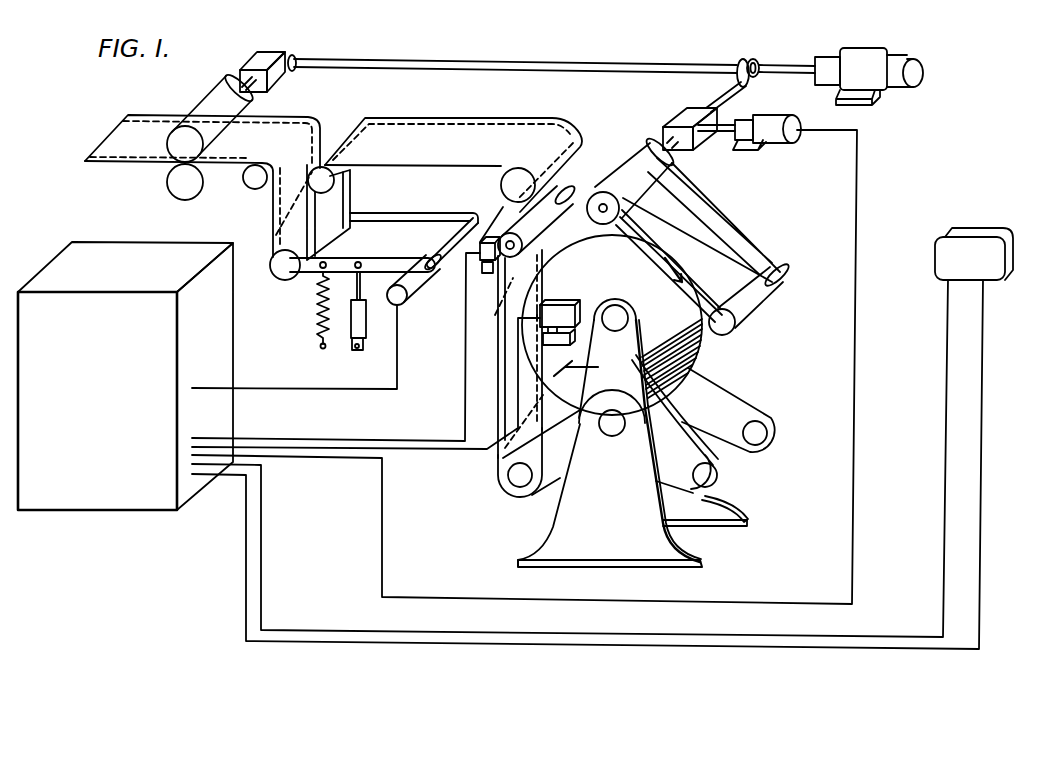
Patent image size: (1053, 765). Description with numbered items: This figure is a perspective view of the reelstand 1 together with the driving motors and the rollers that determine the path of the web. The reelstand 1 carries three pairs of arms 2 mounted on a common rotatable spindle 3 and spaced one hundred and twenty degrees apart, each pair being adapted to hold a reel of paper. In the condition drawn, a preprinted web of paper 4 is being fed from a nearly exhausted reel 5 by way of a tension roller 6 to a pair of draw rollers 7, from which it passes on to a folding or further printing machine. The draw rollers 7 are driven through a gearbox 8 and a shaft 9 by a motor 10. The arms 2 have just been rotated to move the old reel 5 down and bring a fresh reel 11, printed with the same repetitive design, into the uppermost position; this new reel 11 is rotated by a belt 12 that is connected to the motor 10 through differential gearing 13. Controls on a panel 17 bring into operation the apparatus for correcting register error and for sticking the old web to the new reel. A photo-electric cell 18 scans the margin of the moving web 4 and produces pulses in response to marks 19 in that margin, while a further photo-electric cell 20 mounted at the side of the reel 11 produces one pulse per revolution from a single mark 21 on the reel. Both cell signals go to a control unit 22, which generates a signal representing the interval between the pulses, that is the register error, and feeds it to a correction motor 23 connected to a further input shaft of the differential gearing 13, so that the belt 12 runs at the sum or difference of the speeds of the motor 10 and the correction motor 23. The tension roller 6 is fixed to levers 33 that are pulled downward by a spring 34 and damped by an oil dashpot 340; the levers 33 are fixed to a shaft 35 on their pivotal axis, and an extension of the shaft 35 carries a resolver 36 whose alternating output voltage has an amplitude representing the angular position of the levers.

The reelstand 1 is at (698, 509).
The pairs of arms 2 is at (683, 455).
The spindle 3 is at (615, 420).
The web of paper 4 is at (580, 409).
The reel 5 is at (560, 479).
The tension roller 6 is at (287, 281).
The draw rollers 7 is at (187, 147).
The gearbox 8 is at (252, 66).
The shaft 9 is at (583, 62).
The motor 10 is at (863, 60).
The fresh reel 11 is at (688, 324).
The belt 12 is at (750, 249).
The differential gearing 13 is at (679, 121).
The panel 17 is at (1013, 251).
The photo-electric cell 18 is at (488, 274).
The marks 19 is at (510, 168).
The photo-electric cell 20 is at (576, 311).
The mark 21 is at (591, 373).
The control unit 22 is at (224, 312).
The correction motor 23 is at (769, 123).
The levers 33 is at (380, 219).
The spring 34 is at (318, 334).
The shaft 35 is at (440, 254).
The resolver 36 is at (400, 301).
The oil dashpot 340 is at (350, 312).